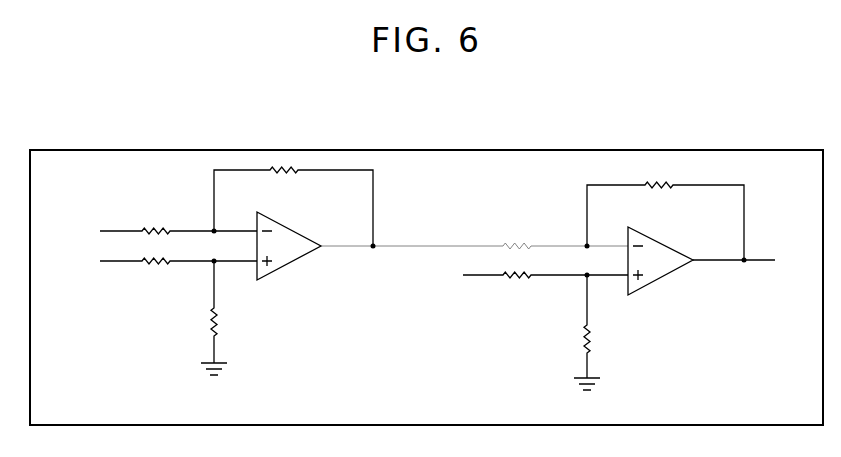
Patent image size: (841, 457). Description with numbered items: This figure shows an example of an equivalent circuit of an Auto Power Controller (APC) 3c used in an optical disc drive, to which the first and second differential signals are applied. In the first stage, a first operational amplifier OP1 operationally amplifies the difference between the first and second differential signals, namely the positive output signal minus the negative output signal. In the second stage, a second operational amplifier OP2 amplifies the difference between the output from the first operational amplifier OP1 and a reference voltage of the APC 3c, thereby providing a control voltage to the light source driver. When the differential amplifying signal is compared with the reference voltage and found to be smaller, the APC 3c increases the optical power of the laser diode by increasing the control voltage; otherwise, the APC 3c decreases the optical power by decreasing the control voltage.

The Auto Power Controller (APC) 3c is at (426, 150).
The first operational amplifier OP1 is at (289, 234).
The second operational amplifier OP2 is at (660, 249).